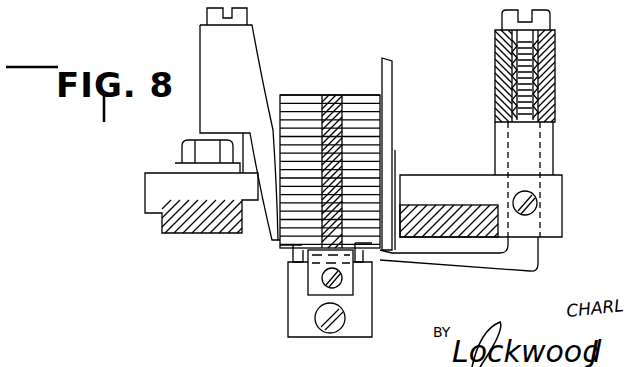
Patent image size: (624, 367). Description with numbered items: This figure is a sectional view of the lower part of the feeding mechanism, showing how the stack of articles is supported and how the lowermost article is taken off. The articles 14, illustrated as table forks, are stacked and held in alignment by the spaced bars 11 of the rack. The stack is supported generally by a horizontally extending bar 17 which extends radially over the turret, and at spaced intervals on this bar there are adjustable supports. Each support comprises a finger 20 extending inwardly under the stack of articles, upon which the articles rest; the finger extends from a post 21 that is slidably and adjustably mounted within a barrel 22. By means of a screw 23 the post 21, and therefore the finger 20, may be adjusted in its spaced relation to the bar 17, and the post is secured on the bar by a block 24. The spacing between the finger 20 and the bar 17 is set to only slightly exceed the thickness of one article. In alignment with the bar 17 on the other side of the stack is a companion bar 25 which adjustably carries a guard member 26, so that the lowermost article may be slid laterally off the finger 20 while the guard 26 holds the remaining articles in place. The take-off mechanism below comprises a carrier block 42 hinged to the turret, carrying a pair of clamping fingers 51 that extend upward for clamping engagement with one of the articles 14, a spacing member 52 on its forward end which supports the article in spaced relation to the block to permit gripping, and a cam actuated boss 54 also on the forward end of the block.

The spaced bars 11 is at (392, 117).
The articles 14 is at (335, 95).
The horizontally extending bar 17 is at (448, 210).
The finger 20 is at (452, 262).
The post 21 is at (553, 107).
The barrel 22 is at (545, 78).
The screw 23 is at (550, 17).
The block 24 is at (557, 210).
The companion bar 25 is at (200, 233).
The guard member 26 is at (263, 88).
The carrier block 42 is at (287, 318).
The clamping fingers 51 is at (287, 252).
The spacing member 52 is at (290, 280).
The cam actuated boss 54 is at (333, 333).